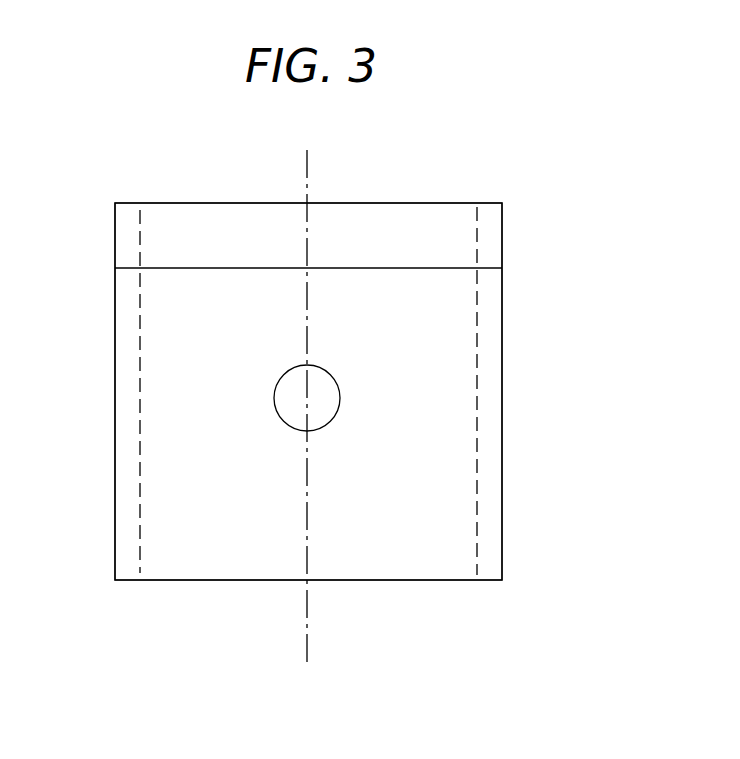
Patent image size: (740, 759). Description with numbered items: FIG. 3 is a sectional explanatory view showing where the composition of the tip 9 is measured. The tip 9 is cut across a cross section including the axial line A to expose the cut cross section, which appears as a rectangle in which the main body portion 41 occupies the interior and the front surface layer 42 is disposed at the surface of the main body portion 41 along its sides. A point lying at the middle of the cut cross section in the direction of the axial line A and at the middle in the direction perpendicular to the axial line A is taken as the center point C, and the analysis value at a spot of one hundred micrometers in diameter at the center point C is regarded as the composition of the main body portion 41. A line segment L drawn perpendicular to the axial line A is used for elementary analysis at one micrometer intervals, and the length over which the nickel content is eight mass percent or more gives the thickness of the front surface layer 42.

The tip 9 is at (568, 118).
The main body portion 41 is at (408, 563).
The front surface layer 42 is at (490, 543).
The line segment L is at (448, 268).
The axial line A is at (307, 391).
The center point C is at (278, 398).